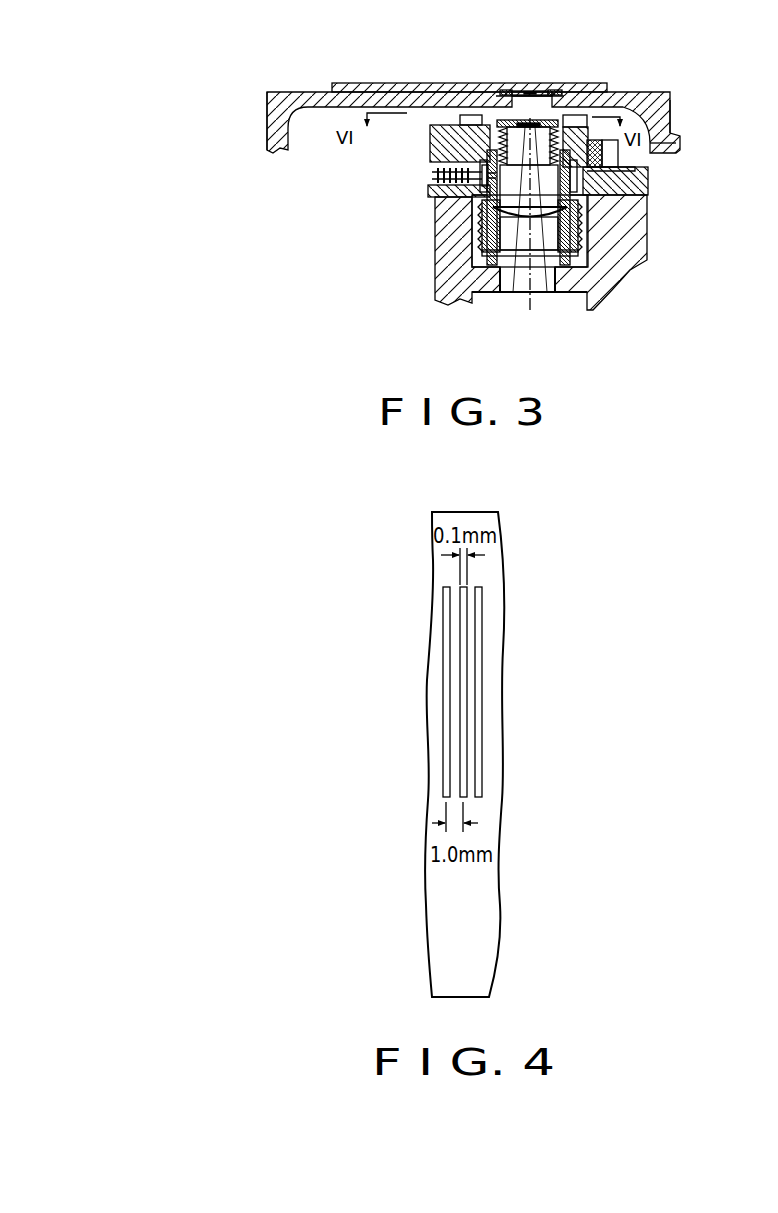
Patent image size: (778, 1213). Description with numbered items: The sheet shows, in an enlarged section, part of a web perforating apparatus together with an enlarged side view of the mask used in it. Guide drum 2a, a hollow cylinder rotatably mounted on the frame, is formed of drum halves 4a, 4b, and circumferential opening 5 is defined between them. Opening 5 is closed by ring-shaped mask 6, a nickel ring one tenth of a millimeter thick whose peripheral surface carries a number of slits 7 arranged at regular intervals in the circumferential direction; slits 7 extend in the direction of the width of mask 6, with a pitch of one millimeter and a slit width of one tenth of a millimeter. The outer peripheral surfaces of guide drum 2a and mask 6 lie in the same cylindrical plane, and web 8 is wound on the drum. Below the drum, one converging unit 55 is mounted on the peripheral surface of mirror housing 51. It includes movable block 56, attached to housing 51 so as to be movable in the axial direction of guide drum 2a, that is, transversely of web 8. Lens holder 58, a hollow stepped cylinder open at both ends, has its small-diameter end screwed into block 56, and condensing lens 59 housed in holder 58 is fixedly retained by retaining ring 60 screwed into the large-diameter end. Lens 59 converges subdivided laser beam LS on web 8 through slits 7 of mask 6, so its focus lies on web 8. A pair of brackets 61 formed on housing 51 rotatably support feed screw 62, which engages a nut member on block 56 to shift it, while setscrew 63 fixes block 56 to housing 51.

In FIG. 3, the guide drum 2a is at (260, 123).
In FIG. 3, the drum half 4a is at (296, 92).
In FIG. 3, the drum half 4b is at (651, 92).
In FIG. 3, the circumferential opening 5 is at (526, 92).
In FIG. 3, the ring-shaped mask 6 is at (501, 92).
In FIG. 4, the ring-shaped mask 6 is at (488, 512).
In FIG. 3, the slits 7 is at (540, 93).
In FIG. 4, the slits 7 is at (448, 692).
In FIG. 3, the web 8 is at (384, 82).
In FIG. 3, the mirror housing 51 is at (622, 255).
In FIG. 3, the converging unit 55 is at (494, 92).
In FIG. 3, the movable block 56 is at (440, 155).
In FIG. 3, the lens holder 58 is at (485, 204).
In FIG. 3, the condensing lens 59 is at (570, 203).
In FIG. 3, the retaining ring 60 is at (493, 250).
In FIG. 3, the brackets 61 is at (460, 120).
In FIG. 3, the feed screw 62 is at (595, 138).
In FIG. 3, the setscrew 63 is at (608, 157).
In FIG. 3, the subdivided laser beam LS is at (545, 298).